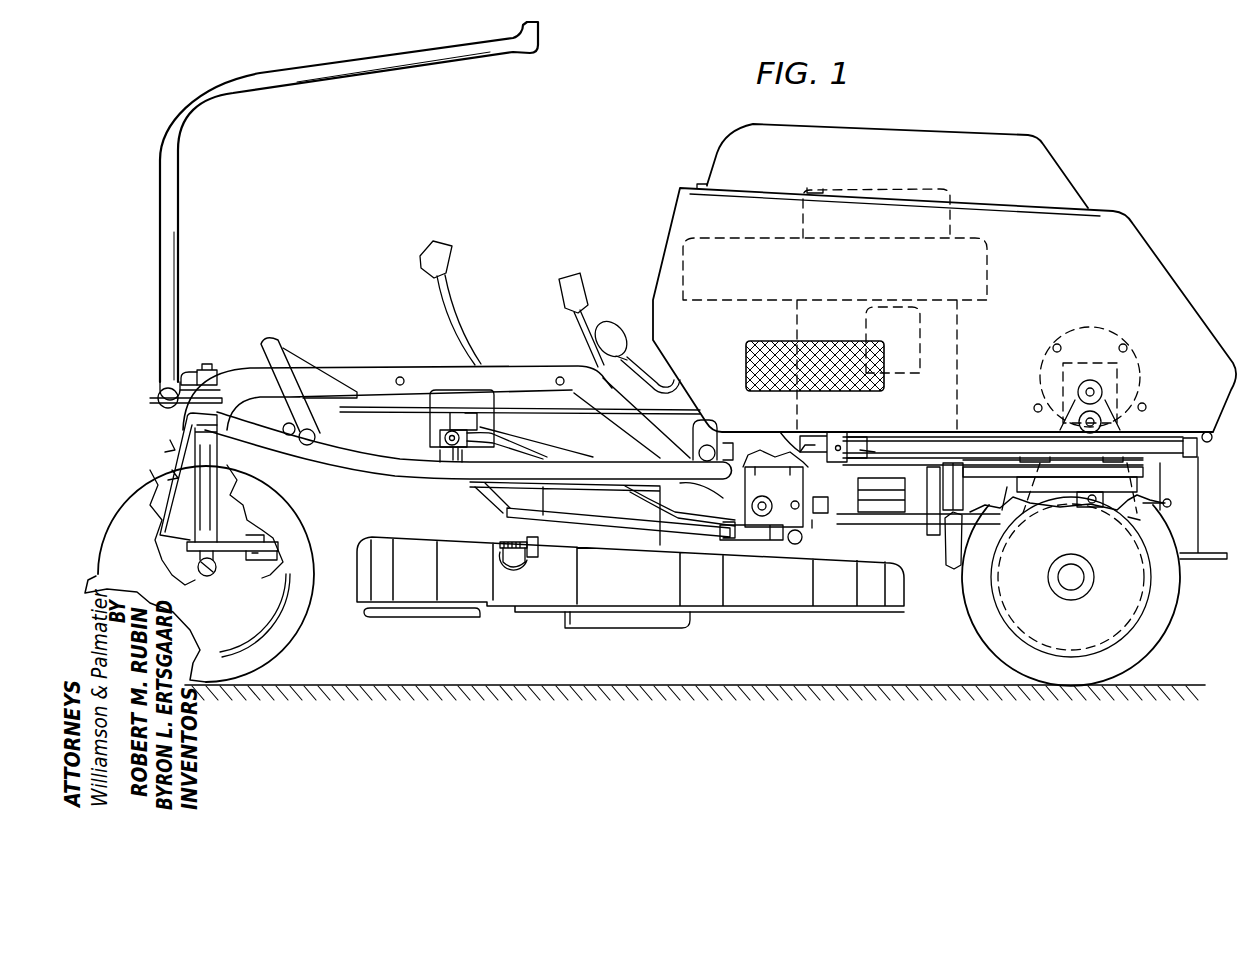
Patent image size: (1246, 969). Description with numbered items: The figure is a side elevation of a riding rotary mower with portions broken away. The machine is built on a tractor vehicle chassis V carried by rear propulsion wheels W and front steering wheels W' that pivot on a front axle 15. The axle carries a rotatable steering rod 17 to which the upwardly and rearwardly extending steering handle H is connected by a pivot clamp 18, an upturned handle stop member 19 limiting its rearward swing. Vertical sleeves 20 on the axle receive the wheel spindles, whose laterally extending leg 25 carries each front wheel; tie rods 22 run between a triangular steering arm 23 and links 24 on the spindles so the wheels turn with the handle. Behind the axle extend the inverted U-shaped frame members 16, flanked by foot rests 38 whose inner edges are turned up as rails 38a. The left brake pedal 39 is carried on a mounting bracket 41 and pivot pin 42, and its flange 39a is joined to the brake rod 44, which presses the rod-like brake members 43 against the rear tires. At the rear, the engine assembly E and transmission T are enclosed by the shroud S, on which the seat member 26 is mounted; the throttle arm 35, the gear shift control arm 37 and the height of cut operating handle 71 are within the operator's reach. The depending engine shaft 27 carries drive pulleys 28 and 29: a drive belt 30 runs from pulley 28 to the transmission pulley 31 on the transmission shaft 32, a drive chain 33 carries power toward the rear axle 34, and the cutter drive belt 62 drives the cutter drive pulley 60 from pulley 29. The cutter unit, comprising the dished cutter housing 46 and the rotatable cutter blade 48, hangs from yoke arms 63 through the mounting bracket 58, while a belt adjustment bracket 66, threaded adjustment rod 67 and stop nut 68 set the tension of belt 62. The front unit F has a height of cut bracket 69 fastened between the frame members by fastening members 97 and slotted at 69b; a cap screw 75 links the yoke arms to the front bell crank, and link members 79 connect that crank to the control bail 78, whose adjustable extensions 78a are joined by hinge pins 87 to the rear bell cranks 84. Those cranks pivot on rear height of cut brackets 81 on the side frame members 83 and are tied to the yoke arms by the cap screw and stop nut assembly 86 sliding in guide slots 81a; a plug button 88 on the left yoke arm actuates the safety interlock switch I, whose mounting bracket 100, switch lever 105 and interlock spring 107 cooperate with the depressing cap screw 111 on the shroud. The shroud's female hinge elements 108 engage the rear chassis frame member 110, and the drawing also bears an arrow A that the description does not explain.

The steering handle H is at (391, 78).
The tractor vehicle chassis V is at (502, 323).
The height of cut operating handle 71 is at (463, 313).
The gear shift control arm 37 is at (584, 292).
The throttle arm 35 is at (616, 340).
The frame members 16 is at (497, 366).
The fastening members 97 is at (405, 381).
The brake pedal 39 is at (263, 340).
The pedal flange portion 39a is at (298, 361).
The handle stop member 19 is at (185, 372).
The steering rod 17 is at (207, 369).
The pivot clamp 18 is at (158, 407).
The front axle 15 is at (166, 457).
The mounting brackets 41 is at (286, 424).
The brake rod 44 is at (378, 414).
The front unit F is at (412, 430).
The cap screw 75 is at (460, 438).
The front height of cut bracket 69 is at (520, 418).
The yoke arms 63 is at (556, 449).
The foot abutments or rails 38a is at (632, 452).
The pivot pins 42 is at (305, 446).
The vertical sleeves 20 is at (208, 490).
The foot rests 38 is at (391, 473).
The slot 69b is at (452, 462).
The link members 79 is at (488, 492).
The direction arrow A is at (450, 536).
The tie rods 22 is at (250, 536).
The triangular steering arm 23 is at (279, 548).
The links 24 is at (220, 567).
The laterally extending spindle leg 25 is at (206, 578).
The front steering wheels W' is at (207, 574).
The cutter housing 46 is at (630, 582).
The cutter blade 48 is at (418, 617).
The cutter housing mounting bracket 58 is at (565, 513).
The cutter drive pulley 60 is at (662, 510).
The belt adjustment bracket 66 is at (526, 566).
The threaded adjustment rod 67 is at (512, 541).
The stop nut 68 is at (539, 545).
The control bail 78 is at (630, 527).
The control bail extensions 78a is at (768, 541).
The rear height of cut bracket 81 is at (774, 495).
The guide slots 81a is at (719, 493).
The cap screw and stop nut assembly 86 is at (777, 497).
The rear bell crank 84 is at (780, 511).
The plug button 88 is at (828, 505).
The drive pulley 28 is at (881, 495).
The cutter drive belt 62 is at (813, 529).
The drive pulley 29 is at (855, 527).
The hinge pins 87 is at (795, 545).
The brake members 43 is at (952, 567).
The seat member 26 is at (948, 131).
The shroud S is at (1152, 245).
The engine assembly E is at (968, 332).
The transmission T is at (1093, 348).
The safety interlock switch unit I is at (833, 427).
The switch lever depressing cap screw 111 is at (802, 432).
The switch mounting bracket 100 is at (842, 438).
The interlock spring 107 is at (878, 433).
The switch lever 105 is at (868, 452).
The engine shaft 27 is at (904, 466).
The female hinge elements 108 is at (1212, 432).
The rear chassis frame member 110 is at (1199, 452).
The rear chassis side frame members 83 is at (1162, 463).
The transmission shaft 32 is at (1078, 472).
The drive belt 30 is at (999, 509).
The transmission pulley 31 is at (1063, 493).
The drive chain 33 is at (1149, 523).
The rear axle 34 is at (1071, 582).
The rear propulsion wheels W is at (1082, 591).